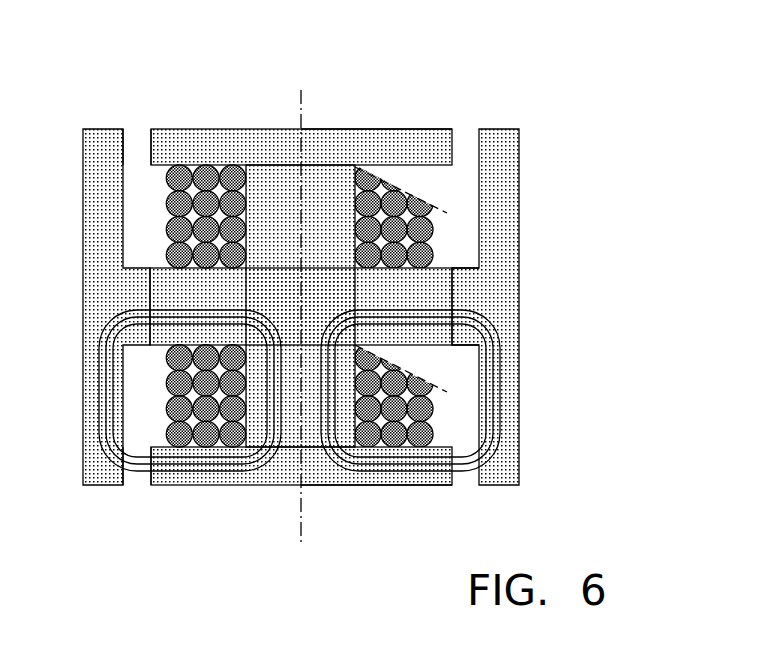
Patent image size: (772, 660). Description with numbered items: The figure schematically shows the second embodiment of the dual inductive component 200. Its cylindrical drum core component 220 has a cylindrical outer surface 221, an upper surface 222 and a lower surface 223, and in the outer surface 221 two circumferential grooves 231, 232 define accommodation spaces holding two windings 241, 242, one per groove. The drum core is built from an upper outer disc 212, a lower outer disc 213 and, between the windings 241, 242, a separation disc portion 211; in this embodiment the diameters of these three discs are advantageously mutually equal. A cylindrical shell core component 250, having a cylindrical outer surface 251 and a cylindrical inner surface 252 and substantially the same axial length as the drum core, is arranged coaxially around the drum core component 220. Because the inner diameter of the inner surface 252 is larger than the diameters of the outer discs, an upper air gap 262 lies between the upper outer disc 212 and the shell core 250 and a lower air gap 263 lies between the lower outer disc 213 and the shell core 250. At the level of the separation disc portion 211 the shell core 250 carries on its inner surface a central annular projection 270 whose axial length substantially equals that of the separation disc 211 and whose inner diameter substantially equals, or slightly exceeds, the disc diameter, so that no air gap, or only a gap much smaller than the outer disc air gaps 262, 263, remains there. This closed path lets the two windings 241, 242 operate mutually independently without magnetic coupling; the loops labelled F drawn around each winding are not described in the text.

The dual inductive component 200 is at (362, 312).
The separation disc portion 211 is at (182, 293).
The upper outer disc 212 is at (418, 144).
The lower outer disc 213 is at (402, 476).
The cylindrical drum core component 220 is at (301, 530).
The cylindrical outer surface 221 is at (453, 129).
The upper surface 222 is at (349, 129).
The lower surface 223 is at (340, 485).
The circumferential groove 231 is at (486, 216).
The circumferential groove 232 is at (486, 397).
The winding 241 is at (397, 232).
The winding 242 is at (397, 406).
The cylindrical shell core component 250 is at (114, 329).
The cylindrical outer surface 251 is at (83, 180).
The cylindrical inner surface 252 is at (125, 182).
The upper air gap 262 is at (138, 145).
The lower air gap 263 is at (137, 479).
The central annular projection 270 is at (465, 288).
The magnetic flux path F is at (90, 400).